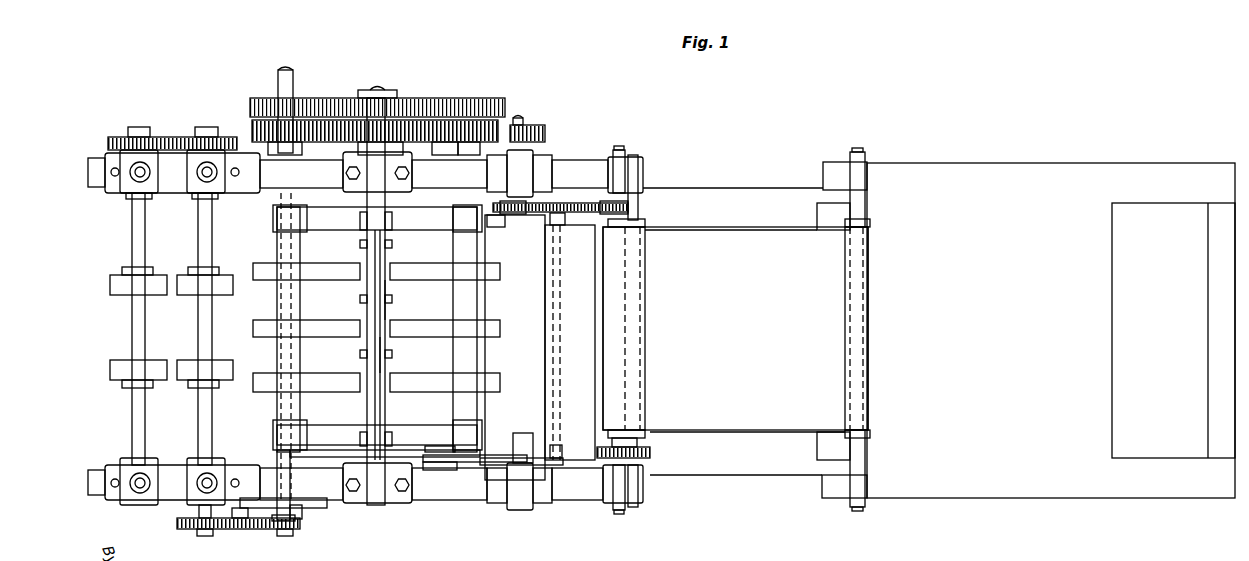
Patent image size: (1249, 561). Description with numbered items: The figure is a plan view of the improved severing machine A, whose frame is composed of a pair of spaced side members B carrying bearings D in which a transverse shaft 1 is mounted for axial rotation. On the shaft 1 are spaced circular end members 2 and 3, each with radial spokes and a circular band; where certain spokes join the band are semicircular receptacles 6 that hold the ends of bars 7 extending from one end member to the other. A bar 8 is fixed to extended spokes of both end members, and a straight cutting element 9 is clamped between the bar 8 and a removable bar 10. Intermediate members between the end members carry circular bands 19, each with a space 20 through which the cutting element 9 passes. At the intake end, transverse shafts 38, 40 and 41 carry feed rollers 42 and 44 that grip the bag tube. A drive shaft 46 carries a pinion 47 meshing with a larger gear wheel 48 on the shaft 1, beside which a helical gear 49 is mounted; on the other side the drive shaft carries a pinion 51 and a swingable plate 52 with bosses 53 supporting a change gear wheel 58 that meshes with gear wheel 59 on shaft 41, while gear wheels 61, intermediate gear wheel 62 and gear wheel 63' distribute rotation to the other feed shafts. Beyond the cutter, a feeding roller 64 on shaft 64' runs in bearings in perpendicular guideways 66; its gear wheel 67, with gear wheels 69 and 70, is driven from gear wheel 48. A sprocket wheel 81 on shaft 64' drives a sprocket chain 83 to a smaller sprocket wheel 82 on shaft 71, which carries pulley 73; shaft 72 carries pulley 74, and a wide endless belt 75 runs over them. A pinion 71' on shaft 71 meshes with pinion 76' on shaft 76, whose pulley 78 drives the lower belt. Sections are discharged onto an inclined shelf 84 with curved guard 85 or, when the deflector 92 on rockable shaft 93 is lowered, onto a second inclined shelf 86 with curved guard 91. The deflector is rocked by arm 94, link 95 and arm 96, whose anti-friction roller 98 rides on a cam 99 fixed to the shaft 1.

The shaft 1 is at (383, 202).
The circular end member 2 is at (425, 216).
The circular end member 3 is at (325, 432).
The semicircular receptacle 6 is at (300, 211).
The bar 7 is at (295, 298).
The bar 8 is at (365, 252).
The cutting element 9 is at (390, 253).
The removable bar 10 is at (390, 345).
The circular band 19 is at (445, 326).
The space 20 is at (390, 280).
The shaft 38 is at (133, 425).
The shaft 40 is at (211, 425).
The shaft 41 is at (180, 516).
The feed roller 42 is at (152, 295).
The feed roller 44 is at (218, 295).
The drive shaft 46 is at (304, 282).
The pinion 47 is at (252, 125).
The gear wheel 48 is at (378, 130).
The helical gear 49 is at (451, 103).
The pinion 51 is at (297, 520).
The plate 52 is at (308, 513).
The boss 53 is at (285, 508).
The gear wheel 58 is at (250, 530).
The gear wheel 59 is at (184, 530).
The gear wheel 61 is at (189, 137).
The intermediate gear wheel 62 is at (170, 137).
The gear wheel 63' is at (124, 151).
The feeding roller 64 is at (515, 347).
The shaft 64' is at (534, 109).
The perpendicular guideway 66 is at (535, 160).
The gear wheel 67 is at (540, 127).
The gear wheel 69 is at (467, 150).
The gear wheel 70 is at (440, 150).
The shaft 71 is at (637, 156).
The pinion 71' is at (612, 495).
The shaft 72 is at (858, 150).
The pulley 73 is at (625, 225).
The pulley 74 is at (868, 225).
The endless belt 75 is at (735, 328).
The shaft 76 is at (640, 448).
The pinion 76' is at (655, 483).
The pulley 78 is at (645, 440).
The sprocket wheel 81 is at (493, 222).
The sprocket wheel 82 is at (640, 193).
The sprocket chain 83 is at (567, 212).
The inclined shelf 84 is at (1051, 330).
The curved guard 85 is at (1173, 330).
The second inclined shelf 86 is at (744, 331).
The curved guard 91 is at (817, 212).
The deflector 92 is at (570, 342).
The rockable shaft 93 is at (565, 204).
The arm 94 is at (562, 452).
The link 95 is at (498, 460).
The arm 96 is at (445, 470).
The anti-friction roller 98 is at (436, 446).
The cam 99 is at (407, 450).
The severing machine A is at (448, 77).
The side member B is at (318, 166).
The bearing D is at (343, 166).